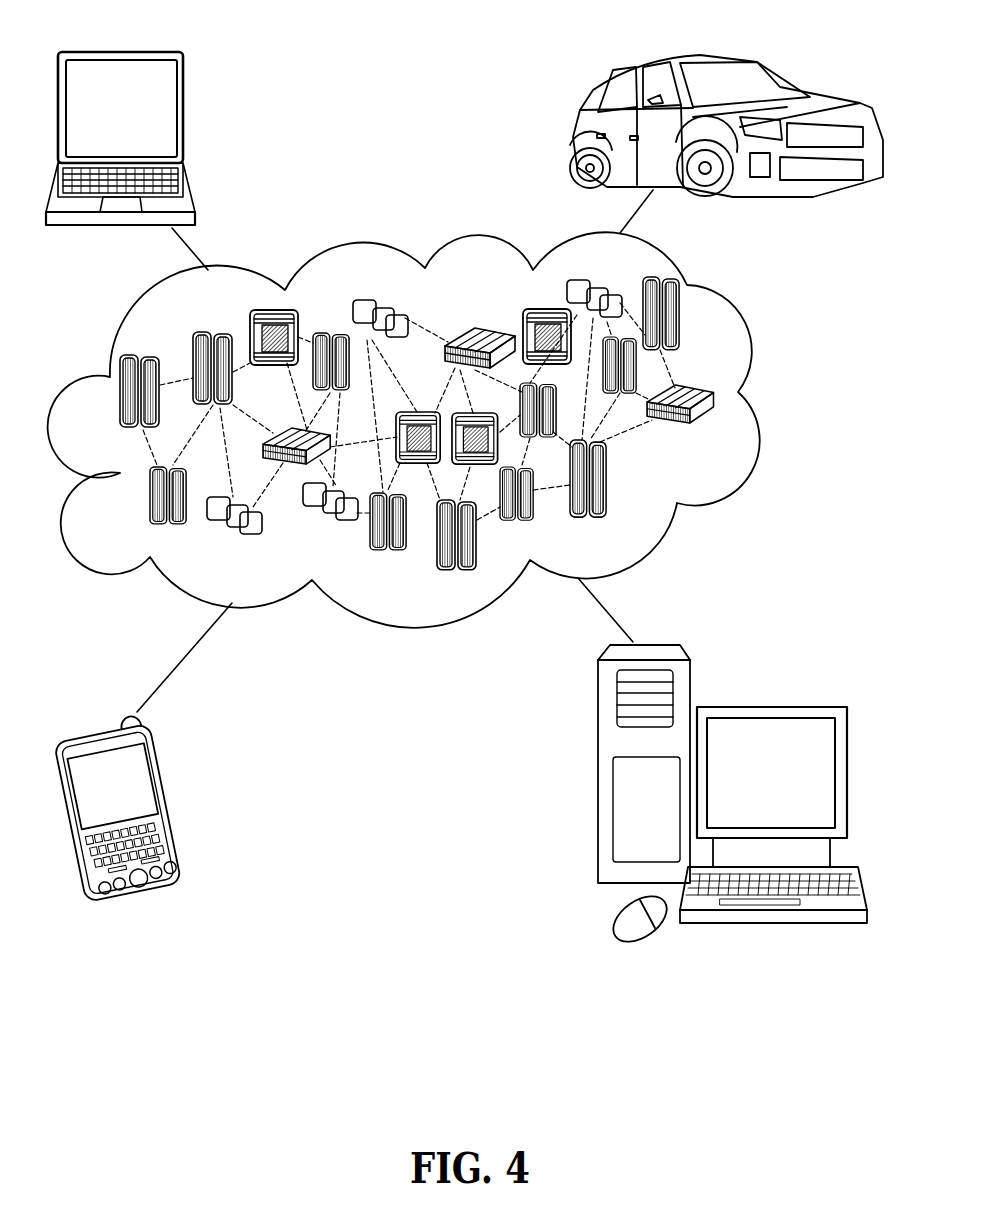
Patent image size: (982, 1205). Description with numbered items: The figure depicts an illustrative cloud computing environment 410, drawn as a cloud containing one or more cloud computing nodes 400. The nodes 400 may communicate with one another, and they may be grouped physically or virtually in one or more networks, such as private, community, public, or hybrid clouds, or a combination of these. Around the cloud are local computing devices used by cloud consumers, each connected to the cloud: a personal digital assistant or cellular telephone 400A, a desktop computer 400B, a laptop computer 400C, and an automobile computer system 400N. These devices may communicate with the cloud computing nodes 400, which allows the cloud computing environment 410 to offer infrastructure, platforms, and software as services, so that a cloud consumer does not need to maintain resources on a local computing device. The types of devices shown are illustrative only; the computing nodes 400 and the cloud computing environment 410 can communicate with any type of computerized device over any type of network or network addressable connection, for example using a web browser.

The cloud computing nodes 400 is at (442, 429).
The cloud computing environment 410 is at (767, 402).
The personal digital assistant (PDA) or cellular telephone 400A is at (173, 803).
The desktop computer 400B is at (767, 705).
The laptop computer 400C is at (185, 118).
The automobile computer system 400N is at (573, 135).